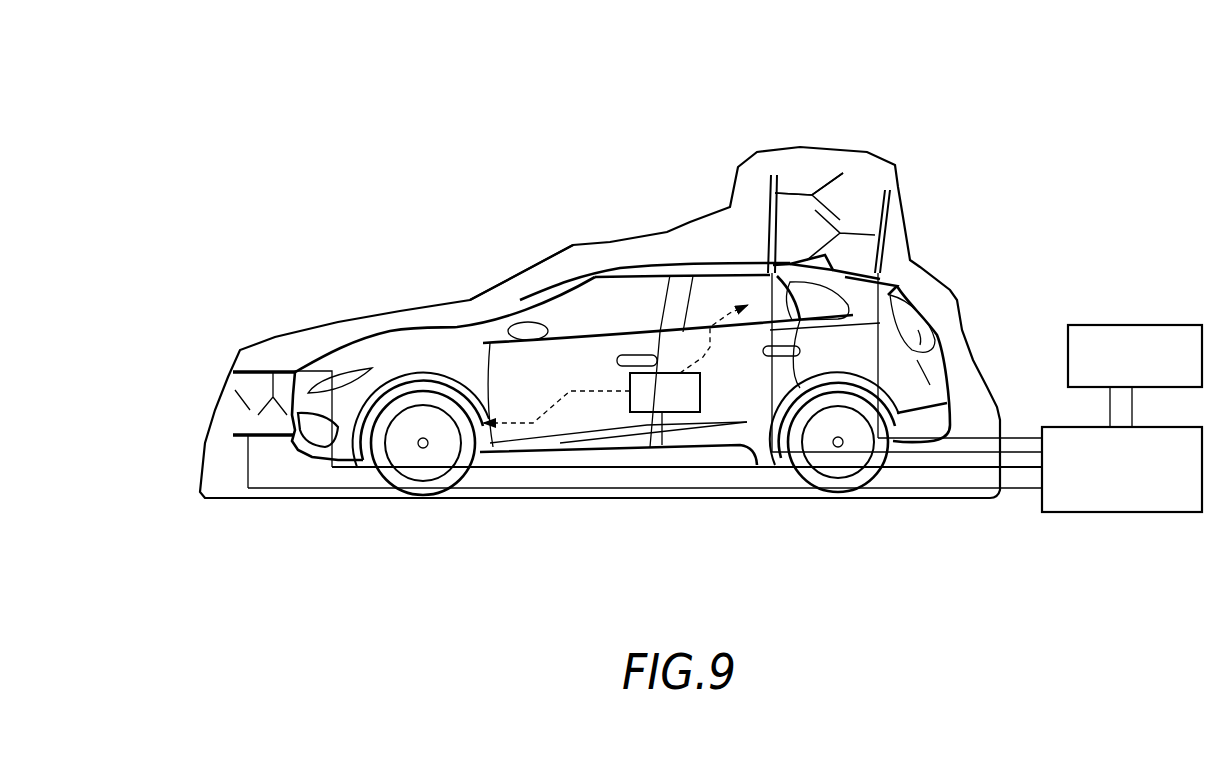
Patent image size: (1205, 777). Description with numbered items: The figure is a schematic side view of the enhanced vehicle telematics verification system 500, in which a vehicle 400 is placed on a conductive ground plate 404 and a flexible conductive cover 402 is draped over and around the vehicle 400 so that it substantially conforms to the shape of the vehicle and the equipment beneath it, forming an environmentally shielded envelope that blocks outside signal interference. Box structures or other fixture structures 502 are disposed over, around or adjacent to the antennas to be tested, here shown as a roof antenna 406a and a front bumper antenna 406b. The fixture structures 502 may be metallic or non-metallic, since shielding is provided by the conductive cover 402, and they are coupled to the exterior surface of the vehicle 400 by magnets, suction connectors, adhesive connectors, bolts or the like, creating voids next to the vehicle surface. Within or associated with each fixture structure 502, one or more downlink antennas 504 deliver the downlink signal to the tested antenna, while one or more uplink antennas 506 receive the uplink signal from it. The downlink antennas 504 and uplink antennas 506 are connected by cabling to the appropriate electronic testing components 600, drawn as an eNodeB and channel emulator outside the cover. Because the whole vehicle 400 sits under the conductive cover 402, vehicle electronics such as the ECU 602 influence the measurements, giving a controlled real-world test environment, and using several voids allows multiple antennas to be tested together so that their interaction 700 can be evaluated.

The vehicle 400 is at (457, 363).
The conductive cover 402 is at (523, 253).
The conductive ground plate 404 is at (827, 505).
The roof antenna 406a is at (800, 252).
The front bumper antenna 406b is at (300, 427).
The enhanced vehicle telematics verification system 500 is at (447, 270).
The box structure or fixture structure 502 is at (267, 363).
The downlink antenna 504 is at (820, 175).
The uplink antenna 506 is at (262, 387).
The electronic testing components 600 is at (1043, 367).
The ECU 602 is at (650, 423).
The interaction 700 is at (530, 413).